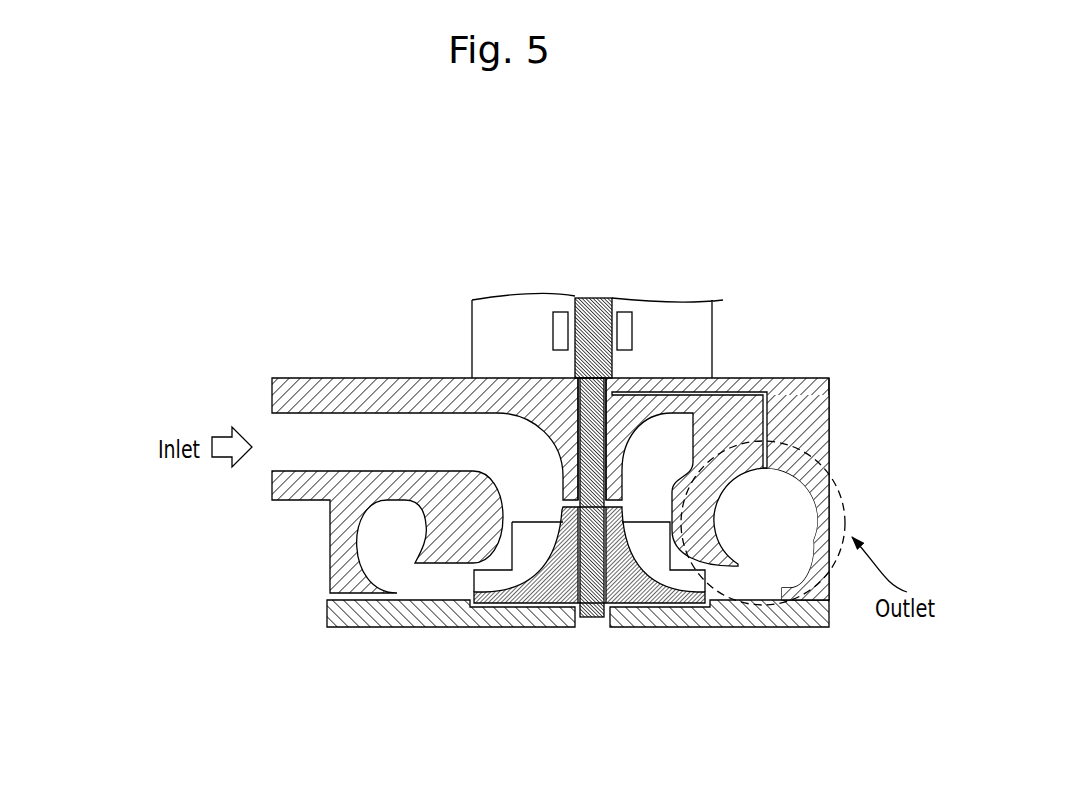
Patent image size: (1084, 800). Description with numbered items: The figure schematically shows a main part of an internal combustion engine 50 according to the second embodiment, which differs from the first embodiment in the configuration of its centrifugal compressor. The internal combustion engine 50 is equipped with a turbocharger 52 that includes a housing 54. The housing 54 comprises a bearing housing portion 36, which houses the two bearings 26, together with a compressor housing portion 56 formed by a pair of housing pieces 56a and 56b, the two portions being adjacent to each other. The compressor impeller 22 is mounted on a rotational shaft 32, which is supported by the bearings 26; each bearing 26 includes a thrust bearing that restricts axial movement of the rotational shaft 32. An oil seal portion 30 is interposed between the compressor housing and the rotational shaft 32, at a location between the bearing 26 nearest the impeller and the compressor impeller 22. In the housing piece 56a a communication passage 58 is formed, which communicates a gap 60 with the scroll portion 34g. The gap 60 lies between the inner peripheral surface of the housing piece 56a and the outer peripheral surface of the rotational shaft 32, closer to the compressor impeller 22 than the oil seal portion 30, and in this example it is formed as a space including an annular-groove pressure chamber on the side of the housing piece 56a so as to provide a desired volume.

The compressor impeller 22 is at (665, 572).
The bearings 26 is at (563, 317).
The oil seal portion 30 is at (575, 382).
The rotational shaft 32 is at (590, 312).
The scroll portion 34g is at (775, 532).
The bearing housing portion 36 is at (472, 350).
The internal combustion engine 50 is at (772, 210).
The turbocharger 52 is at (785, 300).
The housing 54 is at (123, 283).
The compressor housing portion 56 is at (475, 556).
The housing piece 56a is at (272, 500).
The housing piece 56b is at (515, 608).
The communication passage 58 is at (770, 412).
The gap 60 is at (628, 392).